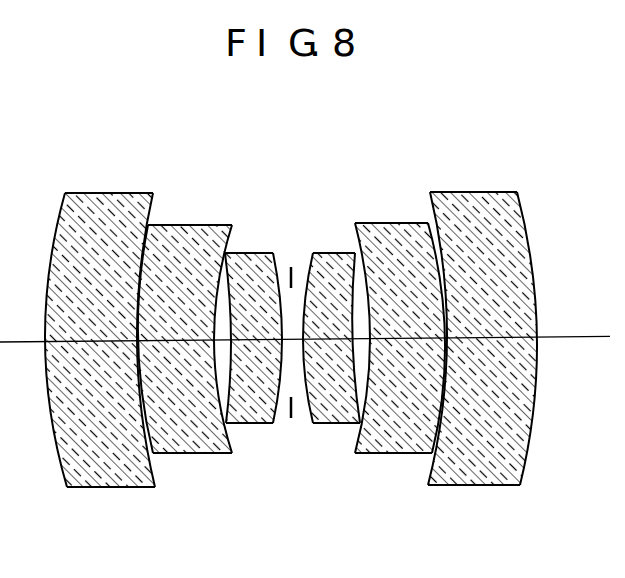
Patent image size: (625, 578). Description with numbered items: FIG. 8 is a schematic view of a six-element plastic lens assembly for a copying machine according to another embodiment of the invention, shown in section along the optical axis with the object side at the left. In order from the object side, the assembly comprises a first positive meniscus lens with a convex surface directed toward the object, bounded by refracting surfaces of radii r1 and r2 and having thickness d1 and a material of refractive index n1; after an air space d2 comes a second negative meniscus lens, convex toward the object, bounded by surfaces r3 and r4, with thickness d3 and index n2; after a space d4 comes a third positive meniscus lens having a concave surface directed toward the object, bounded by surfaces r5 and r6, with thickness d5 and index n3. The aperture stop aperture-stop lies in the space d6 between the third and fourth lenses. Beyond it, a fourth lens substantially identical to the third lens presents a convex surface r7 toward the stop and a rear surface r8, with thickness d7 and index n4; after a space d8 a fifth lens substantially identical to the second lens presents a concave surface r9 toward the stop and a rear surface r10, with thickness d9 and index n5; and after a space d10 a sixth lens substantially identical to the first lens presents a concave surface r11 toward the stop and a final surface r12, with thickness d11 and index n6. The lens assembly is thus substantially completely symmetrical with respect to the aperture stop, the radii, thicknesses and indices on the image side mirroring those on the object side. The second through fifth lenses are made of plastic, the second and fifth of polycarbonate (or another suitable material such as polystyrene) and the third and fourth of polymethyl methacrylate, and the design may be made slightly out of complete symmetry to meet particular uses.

The radius of curvature of the first refracting surface r1 is at (62, 214).
The radius of curvature of the second refracting surface r2 is at (141, 203).
The radius of curvature of the third refracting surface r3 is at (153, 240).
The radius of curvature of the fourth refracting surface r4 is at (232, 240).
The radius of curvature of the fifth refracting surface r5 is at (229, 266).
The radius of curvature of the sixth refracting surface r6 is at (279, 266).
The radius of curvature of the seventh refracting surface r7 is at (306, 268).
The radius of curvature of the eighth refracting surface r8 is at (354, 266).
The radius of curvature of the ninth refracting surface r9 is at (361, 240).
The radius of curvature of the tenth refracting surface r10 is at (431, 240).
The radius of curvature of the eleventh refracting surface r11 is at (438, 210).
The radius of curvature of the twelfth refracting surface r12 is at (522, 210).
The axial thickness of the first lens d1 is at (94, 341).
The air space between the first and second lenses d2 is at (136, 341).
The axial thickness of the second lens d3 is at (178, 341).
The air space between the second and third lenses d4 is at (221, 341).
The axial thickness of the third lens d5 is at (266, 341).
The air space between the third and fourth lenses d6 is at (292, 337).
The axial thickness of the fourth lens d7 is at (355, 340).
The air space between the fourth and fifth lenses d8 is at (396, 329).
The axial thickness of the fifth lens d9 is at (446, 340).
The air space between the fifth and sixth lenses d10 is at (491, 339).
The axial thickness of the sixth lens d11 is at (492, 334).
The refractive index of the first lens material n1 is at (99, 343).
The refractive index of the second lens material n2 is at (185, 349).
The refractive index of the third lens material n3 is at (253, 350).
The refractive index of the fourth lens material n4 is at (331, 350).
The refractive index of the fifth lens material n5 is at (400, 349).
The refractive index of the sixth lens material n6 is at (487, 340).
The aperture stop aperture-stop is at (291, 422).